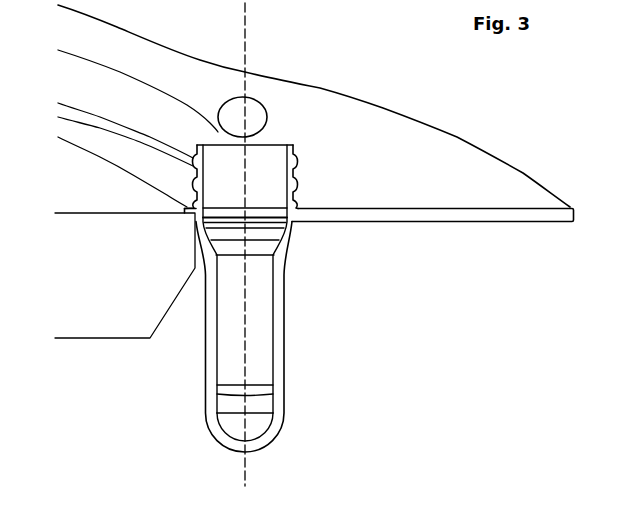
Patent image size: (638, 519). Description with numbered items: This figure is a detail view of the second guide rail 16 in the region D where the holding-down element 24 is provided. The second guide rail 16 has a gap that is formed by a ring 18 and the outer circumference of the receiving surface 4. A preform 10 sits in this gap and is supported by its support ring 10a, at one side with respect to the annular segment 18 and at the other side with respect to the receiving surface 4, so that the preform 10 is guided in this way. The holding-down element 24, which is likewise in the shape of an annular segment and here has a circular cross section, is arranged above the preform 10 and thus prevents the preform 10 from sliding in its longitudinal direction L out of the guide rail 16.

The receiving surface 4 is at (73, 297).
The preform 10 is at (260, 333).
The support ring 10a is at (297, 209).
The second guide rail 16 is at (382, 92).
The ring 18 is at (353, 123).
The holding-down element 24 is at (235, 108).
The region D is at (343, 72).
The longitudinal direction L is at (255, 250).